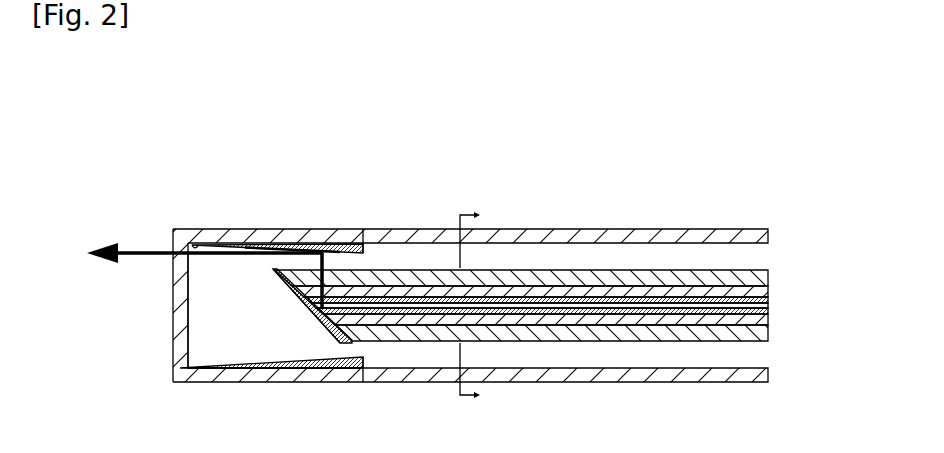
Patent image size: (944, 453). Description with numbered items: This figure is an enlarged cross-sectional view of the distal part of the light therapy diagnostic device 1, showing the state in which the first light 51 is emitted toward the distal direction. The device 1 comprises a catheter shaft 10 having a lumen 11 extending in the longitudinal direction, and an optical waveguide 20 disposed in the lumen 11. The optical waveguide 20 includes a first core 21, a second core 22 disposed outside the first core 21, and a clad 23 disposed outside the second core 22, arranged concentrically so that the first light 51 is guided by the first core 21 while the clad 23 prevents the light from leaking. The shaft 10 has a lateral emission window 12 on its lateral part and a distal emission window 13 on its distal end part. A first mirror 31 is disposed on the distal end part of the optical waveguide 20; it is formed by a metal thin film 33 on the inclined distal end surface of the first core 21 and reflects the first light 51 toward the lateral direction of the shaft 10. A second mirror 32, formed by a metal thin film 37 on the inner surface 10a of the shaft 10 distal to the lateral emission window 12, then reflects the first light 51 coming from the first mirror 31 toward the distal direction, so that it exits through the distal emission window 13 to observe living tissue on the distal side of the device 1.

The light therapy diagnostic device 1 is at (152, 176).
The catheter shaft 10 is at (697, 236).
The inner surface of the shaft 10a is at (197, 243).
The lumen 11 is at (214, 331).
The lateral emission window 12 is at (400, 233).
The distal emission window 13 is at (180, 323).
The optical waveguide 20 is at (667, 193).
The first core 21 is at (516, 296).
The second core 22 is at (567, 302).
The clad 23 is at (622, 278).
The first mirror 31 is at (353, 339).
The second mirror 32 is at (345, 248).
The metal thin film 33 is at (322, 318).
The metal thin film 37 is at (318, 246).
The first light 51 is at (134, 252).